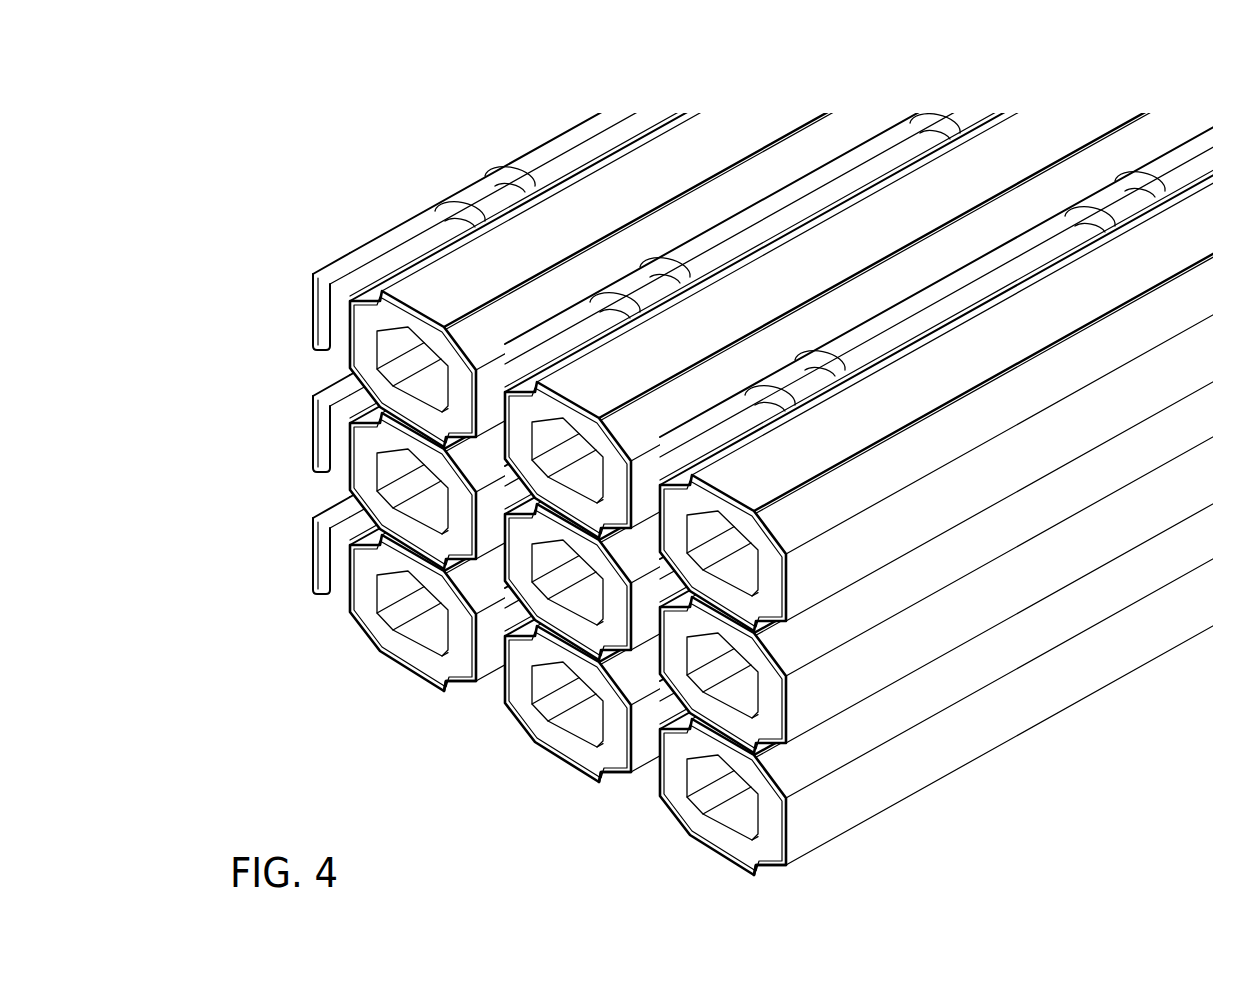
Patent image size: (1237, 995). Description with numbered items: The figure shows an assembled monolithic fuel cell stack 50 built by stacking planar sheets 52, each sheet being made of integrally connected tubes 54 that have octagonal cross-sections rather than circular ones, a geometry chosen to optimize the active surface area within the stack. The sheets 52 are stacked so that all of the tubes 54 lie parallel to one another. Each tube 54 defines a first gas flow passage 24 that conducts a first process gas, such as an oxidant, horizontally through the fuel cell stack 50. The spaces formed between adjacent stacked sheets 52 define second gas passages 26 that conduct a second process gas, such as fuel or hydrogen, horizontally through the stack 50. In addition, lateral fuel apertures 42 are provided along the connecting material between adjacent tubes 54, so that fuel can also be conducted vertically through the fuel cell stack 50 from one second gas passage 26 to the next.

The fuel cell stack 50 is at (740, 447).
The planar sheet 52 is at (1078, 436).
The tube 54 is at (430, 665).
The first gas flow passage 24 is at (378, 338).
The second gas passage 26 is at (485, 460).
The lateral fuel aperture 42 is at (550, 348).